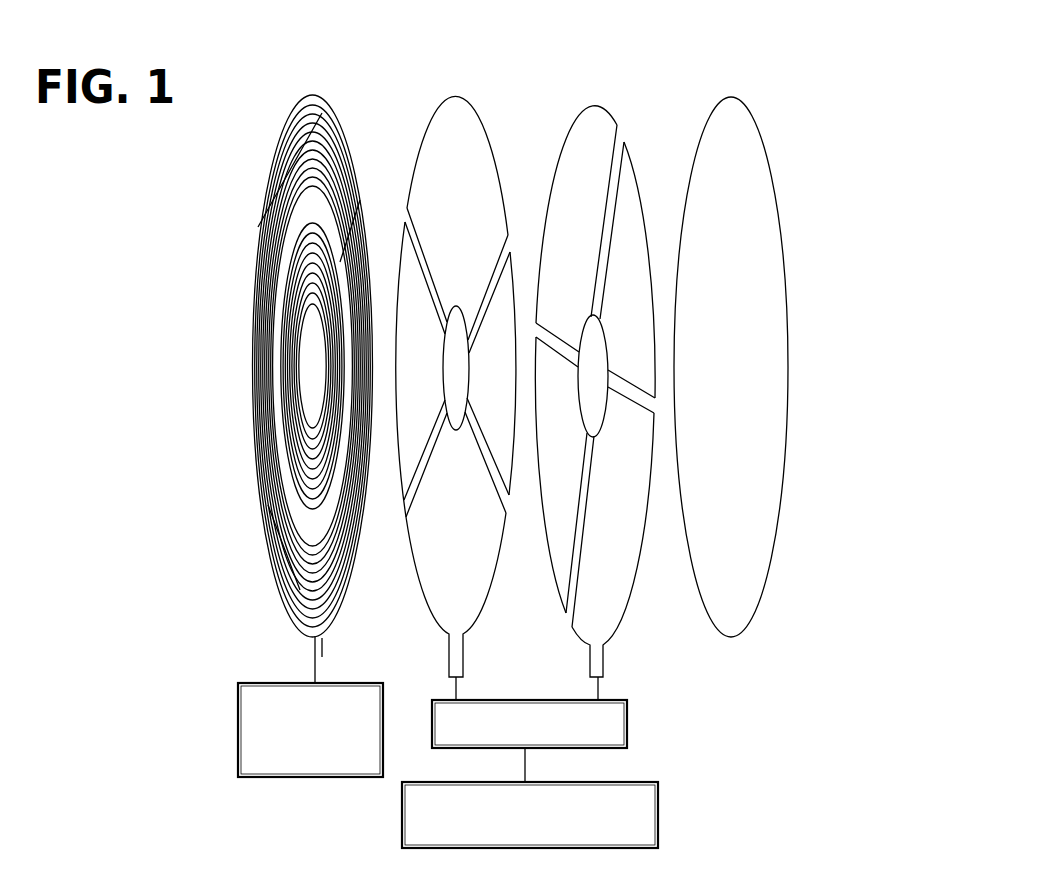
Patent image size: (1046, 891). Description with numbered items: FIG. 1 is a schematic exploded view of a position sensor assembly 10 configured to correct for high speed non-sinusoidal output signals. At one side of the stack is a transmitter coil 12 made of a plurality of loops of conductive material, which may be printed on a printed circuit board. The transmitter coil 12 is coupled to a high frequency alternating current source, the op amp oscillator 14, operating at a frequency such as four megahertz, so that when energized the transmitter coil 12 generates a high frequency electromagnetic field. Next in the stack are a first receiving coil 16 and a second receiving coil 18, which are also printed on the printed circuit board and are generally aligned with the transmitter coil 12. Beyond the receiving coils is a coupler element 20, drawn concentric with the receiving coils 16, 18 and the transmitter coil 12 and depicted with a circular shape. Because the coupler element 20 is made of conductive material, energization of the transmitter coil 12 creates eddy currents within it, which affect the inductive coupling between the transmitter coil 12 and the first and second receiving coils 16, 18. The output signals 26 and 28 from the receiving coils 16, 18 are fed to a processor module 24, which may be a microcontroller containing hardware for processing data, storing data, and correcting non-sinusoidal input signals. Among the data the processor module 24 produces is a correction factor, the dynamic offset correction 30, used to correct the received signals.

The position sensor assembly 10 is at (797, 121).
The transmitter coil 12 is at (258, 224).
The op amp oscillator 14 is at (238, 707).
The first receiving coil 16 is at (425, 133).
The second receiving coil 18 is at (639, 190).
The coupler element 20 is at (786, 275).
The processor module 24 is at (627, 716).
The output signal 26 is at (463, 666).
The output signal 28 is at (604, 666).
The dynamic offset correction 30 is at (658, 808).